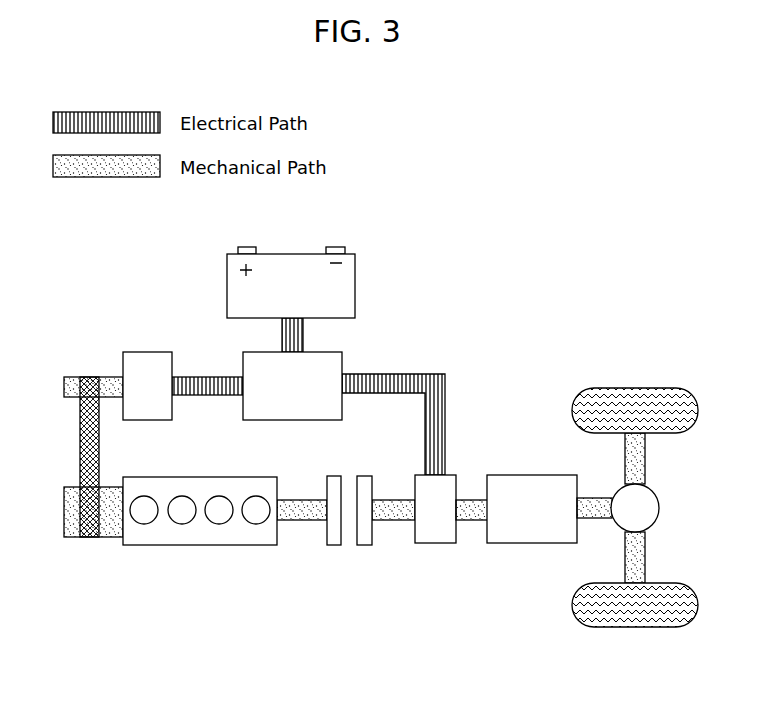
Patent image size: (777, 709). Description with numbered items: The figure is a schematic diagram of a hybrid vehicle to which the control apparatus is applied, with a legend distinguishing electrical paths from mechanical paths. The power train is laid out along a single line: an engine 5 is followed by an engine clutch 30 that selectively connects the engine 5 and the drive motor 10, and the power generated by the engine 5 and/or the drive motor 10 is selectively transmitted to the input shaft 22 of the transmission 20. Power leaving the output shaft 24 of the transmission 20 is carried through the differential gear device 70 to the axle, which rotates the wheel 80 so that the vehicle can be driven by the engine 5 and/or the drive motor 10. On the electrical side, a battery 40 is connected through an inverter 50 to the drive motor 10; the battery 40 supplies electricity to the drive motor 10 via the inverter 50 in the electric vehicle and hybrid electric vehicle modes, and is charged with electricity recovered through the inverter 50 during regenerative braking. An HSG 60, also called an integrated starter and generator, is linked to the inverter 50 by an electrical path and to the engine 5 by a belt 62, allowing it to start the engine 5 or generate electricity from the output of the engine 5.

The engine 5 is at (197, 545).
The drive motor 10 is at (435, 545).
The transmission 20 is at (530, 475).
The input shaft 22 is at (471, 498).
The output shaft 24 is at (597, 498).
The engine clutch 30 is at (346, 558).
The battery 40 is at (355, 283).
The inverter 50 is at (342, 361).
The HSG (hybrid starter & generator) 60 is at (148, 352).
The belt 62 is at (80, 410).
The differential gear device 70 is at (660, 508).
The wheel 80 is at (635, 388).